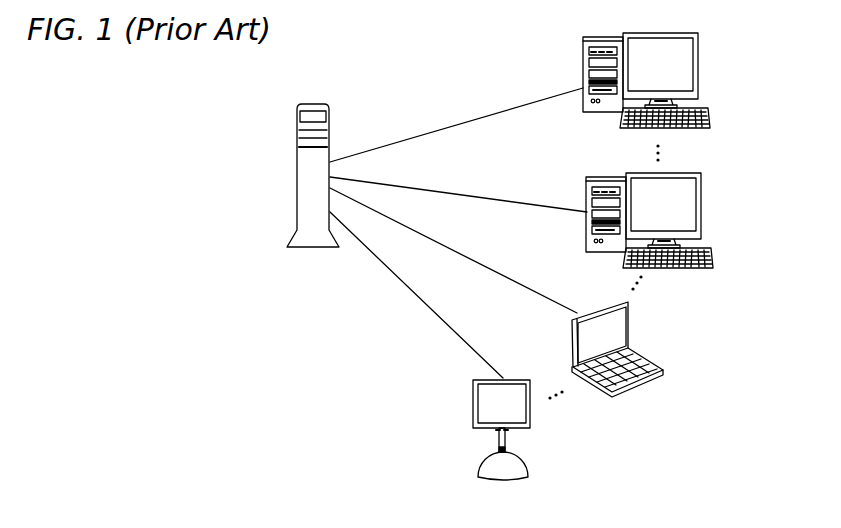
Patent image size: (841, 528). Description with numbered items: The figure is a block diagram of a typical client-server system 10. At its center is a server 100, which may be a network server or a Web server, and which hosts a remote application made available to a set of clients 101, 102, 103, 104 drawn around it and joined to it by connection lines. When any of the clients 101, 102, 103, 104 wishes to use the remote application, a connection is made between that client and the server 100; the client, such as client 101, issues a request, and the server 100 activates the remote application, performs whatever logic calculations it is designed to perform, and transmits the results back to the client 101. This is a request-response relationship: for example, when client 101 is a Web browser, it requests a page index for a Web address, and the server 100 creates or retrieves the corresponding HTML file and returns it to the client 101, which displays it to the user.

The client-server system 10 is at (258, 303).
The server 100 is at (297, 175).
The client 101 is at (698, 67).
The client 102 is at (701, 205).
The client 103 is at (628, 327).
The client 104 is at (530, 418).